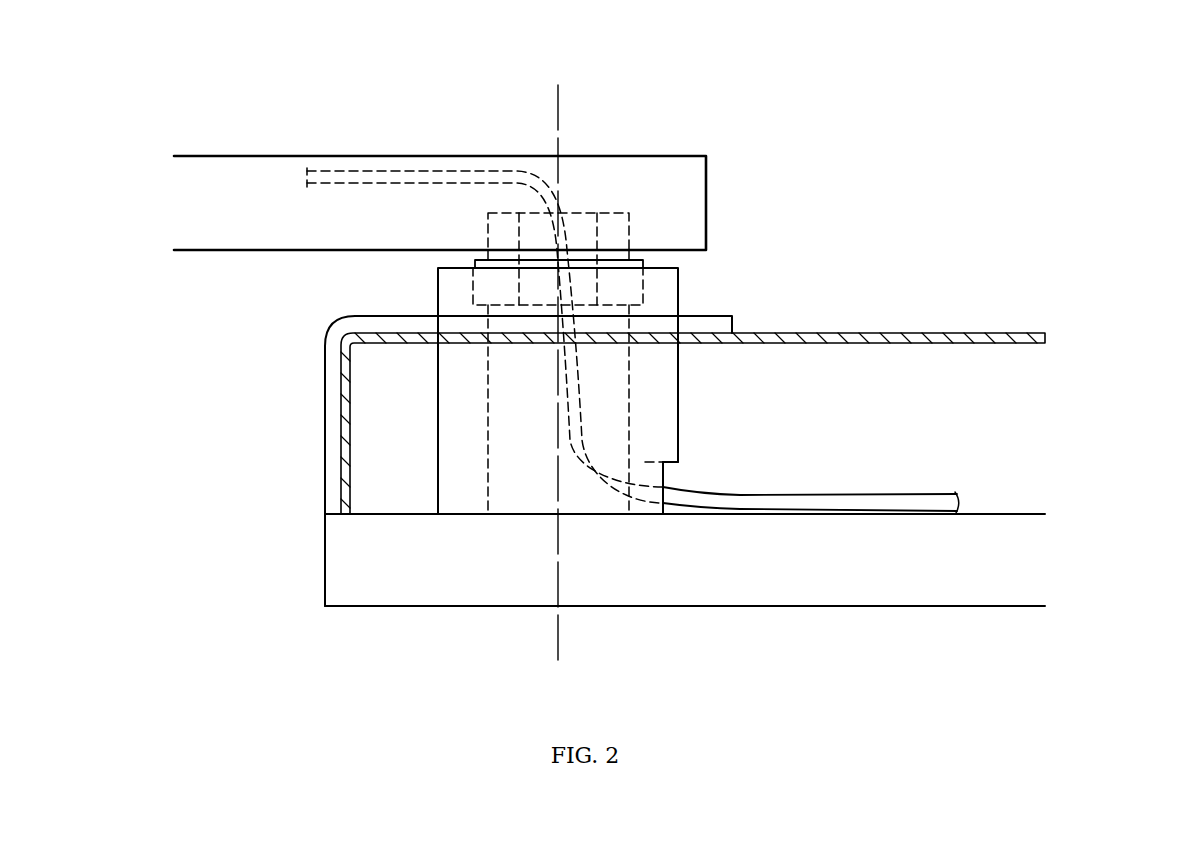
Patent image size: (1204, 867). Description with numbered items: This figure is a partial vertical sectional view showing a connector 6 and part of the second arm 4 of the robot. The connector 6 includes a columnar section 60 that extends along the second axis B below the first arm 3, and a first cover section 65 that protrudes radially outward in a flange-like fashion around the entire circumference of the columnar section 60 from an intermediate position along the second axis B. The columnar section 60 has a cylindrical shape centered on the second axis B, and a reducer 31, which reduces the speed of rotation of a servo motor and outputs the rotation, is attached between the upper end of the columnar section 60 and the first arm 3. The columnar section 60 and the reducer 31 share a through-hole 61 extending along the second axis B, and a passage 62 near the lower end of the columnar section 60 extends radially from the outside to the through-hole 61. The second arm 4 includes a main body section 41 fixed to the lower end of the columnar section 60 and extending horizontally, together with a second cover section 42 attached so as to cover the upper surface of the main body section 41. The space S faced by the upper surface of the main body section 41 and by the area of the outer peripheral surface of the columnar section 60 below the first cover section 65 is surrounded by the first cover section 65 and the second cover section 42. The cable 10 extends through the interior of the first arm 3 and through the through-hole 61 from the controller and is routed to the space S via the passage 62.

The first arm 3 is at (215, 250).
The reducer 31 is at (630, 228).
The connector 6 is at (843, 178).
The columnar section 60 is at (680, 288).
The first cover section 65 is at (732, 326).
The through-hole 61 is at (487, 492).
The passage 62 is at (670, 466).
The cable 10 is at (740, 493).
The second arm 4 is at (1120, 350).
The second cover section 42 is at (1008, 343).
The main body section 41 is at (1017, 513).
The space S is at (902, 447).
The second axis B is at (558, 389).